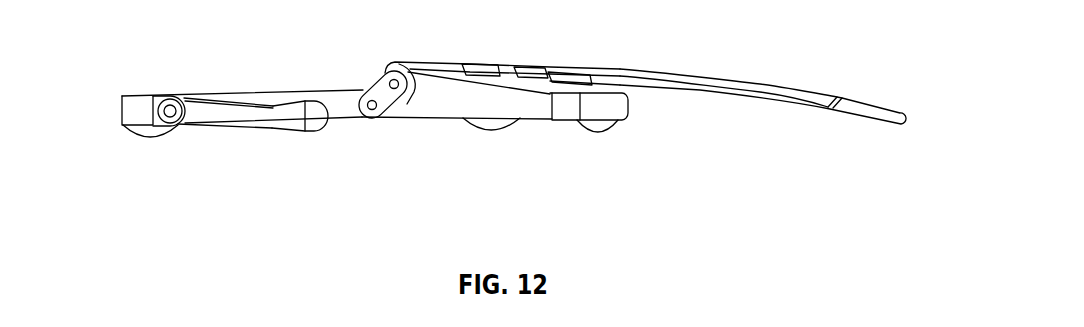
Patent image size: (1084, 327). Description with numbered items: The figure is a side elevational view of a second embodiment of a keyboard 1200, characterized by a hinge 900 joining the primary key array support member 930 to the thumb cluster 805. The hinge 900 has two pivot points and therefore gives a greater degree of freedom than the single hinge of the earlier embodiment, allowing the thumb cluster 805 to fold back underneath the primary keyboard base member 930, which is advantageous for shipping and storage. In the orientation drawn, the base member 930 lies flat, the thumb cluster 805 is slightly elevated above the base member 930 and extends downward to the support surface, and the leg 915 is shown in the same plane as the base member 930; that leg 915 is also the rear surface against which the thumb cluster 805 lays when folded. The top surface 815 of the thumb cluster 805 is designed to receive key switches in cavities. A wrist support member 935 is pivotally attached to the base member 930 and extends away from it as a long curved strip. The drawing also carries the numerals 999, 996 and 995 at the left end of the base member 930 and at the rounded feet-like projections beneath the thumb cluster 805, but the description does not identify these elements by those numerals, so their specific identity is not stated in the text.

The keyboard 1200 is at (108, 114).
The end cap 999 is at (155, 138).
The primary key array support member 930 is at (278, 90).
The leg 915 is at (243, 130).
The hinge 900 is at (383, 103).
The top surface of thumb cluster 815 is at (450, 72).
The thumb cluster 805 is at (540, 105).
The foot 996 is at (487, 125).
The foot 995 is at (602, 128).
The wrist support member 935 is at (723, 77).